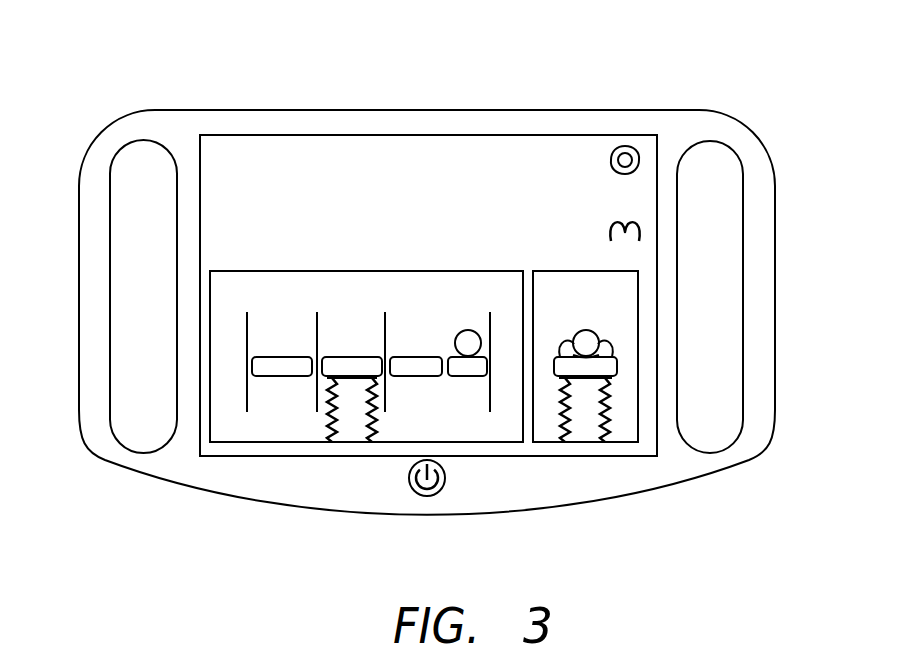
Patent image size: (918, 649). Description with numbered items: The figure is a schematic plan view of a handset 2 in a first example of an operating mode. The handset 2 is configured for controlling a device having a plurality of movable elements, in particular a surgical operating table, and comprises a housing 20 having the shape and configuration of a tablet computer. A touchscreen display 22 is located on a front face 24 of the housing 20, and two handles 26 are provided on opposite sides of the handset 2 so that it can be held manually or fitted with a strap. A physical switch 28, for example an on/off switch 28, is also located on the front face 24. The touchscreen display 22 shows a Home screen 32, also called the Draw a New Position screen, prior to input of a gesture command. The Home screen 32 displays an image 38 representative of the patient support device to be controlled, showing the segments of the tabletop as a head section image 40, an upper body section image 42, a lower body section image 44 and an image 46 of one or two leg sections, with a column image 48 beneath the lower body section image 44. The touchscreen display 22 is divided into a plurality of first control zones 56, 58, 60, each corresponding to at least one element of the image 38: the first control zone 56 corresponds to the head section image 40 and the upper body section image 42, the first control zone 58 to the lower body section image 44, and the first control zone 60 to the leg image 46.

The handset 2 is at (757, 92).
The housing 20 is at (575, 110).
The touchscreen display 22 is at (418, 150).
The front face 24 is at (273, 150).
The handles 26 is at (88, 447).
The on/off switch 28 is at (425, 497).
The Home screen 32 is at (223, 445).
The image 38 is at (466, 385).
The head section image 40 is at (452, 326).
The upper body section image 42 is at (425, 357).
The lower body section image 44 is at (378, 357).
The leg section image 46 is at (295, 357).
The column image 48 is at (333, 405).
The first control zone 56 is at (460, 431).
The first control zone 58 is at (350, 307).
The first control zone 60 is at (297, 414).